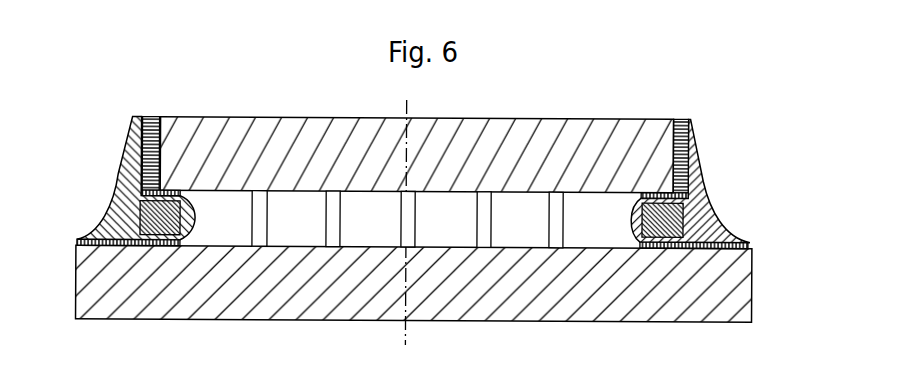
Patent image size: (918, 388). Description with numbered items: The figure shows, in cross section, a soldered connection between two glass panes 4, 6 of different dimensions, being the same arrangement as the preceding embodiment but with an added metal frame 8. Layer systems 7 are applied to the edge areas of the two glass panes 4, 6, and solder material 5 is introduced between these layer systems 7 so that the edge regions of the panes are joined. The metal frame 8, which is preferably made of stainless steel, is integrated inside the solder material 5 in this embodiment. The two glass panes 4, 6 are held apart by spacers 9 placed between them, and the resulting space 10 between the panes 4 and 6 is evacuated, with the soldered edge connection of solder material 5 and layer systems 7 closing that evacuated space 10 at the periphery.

The glass pane 4 is at (661, 146).
The solder material 5 is at (122, 161).
The glass pane 6 is at (729, 270).
The layer systems 7 is at (133, 117).
The metal frame 8 is at (139, 215).
The spacers 9 is at (257, 207).
The space 10 is at (514, 210).